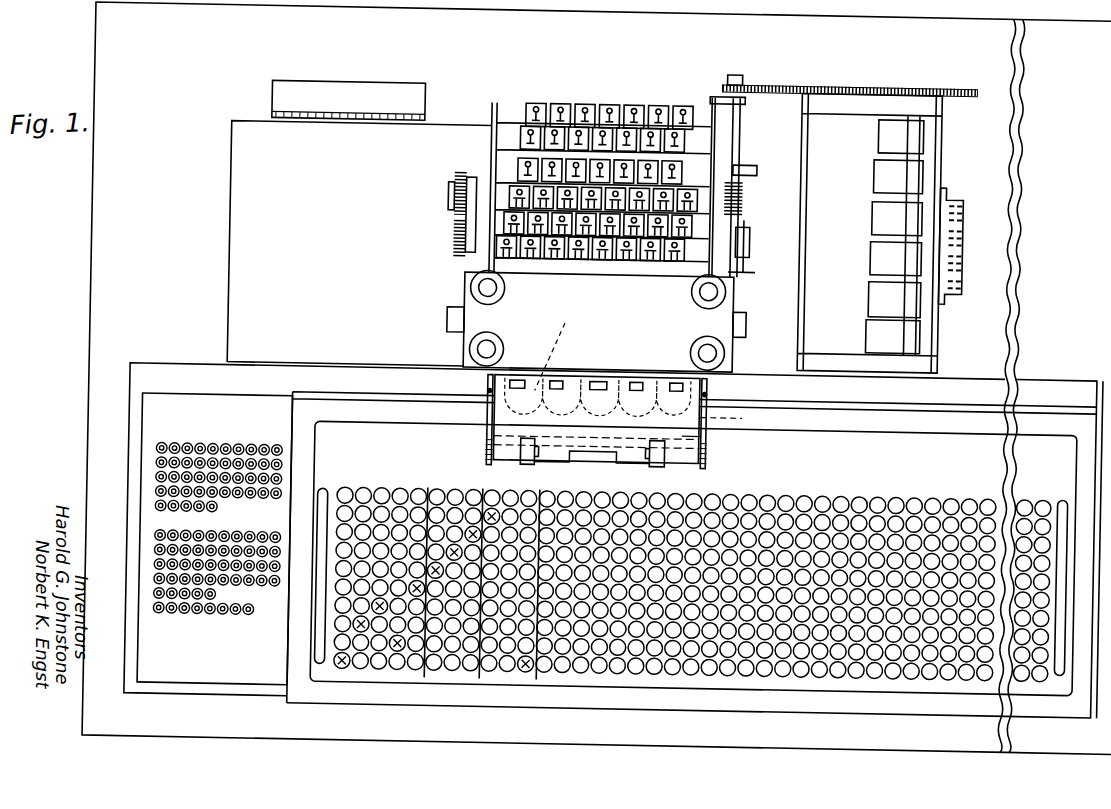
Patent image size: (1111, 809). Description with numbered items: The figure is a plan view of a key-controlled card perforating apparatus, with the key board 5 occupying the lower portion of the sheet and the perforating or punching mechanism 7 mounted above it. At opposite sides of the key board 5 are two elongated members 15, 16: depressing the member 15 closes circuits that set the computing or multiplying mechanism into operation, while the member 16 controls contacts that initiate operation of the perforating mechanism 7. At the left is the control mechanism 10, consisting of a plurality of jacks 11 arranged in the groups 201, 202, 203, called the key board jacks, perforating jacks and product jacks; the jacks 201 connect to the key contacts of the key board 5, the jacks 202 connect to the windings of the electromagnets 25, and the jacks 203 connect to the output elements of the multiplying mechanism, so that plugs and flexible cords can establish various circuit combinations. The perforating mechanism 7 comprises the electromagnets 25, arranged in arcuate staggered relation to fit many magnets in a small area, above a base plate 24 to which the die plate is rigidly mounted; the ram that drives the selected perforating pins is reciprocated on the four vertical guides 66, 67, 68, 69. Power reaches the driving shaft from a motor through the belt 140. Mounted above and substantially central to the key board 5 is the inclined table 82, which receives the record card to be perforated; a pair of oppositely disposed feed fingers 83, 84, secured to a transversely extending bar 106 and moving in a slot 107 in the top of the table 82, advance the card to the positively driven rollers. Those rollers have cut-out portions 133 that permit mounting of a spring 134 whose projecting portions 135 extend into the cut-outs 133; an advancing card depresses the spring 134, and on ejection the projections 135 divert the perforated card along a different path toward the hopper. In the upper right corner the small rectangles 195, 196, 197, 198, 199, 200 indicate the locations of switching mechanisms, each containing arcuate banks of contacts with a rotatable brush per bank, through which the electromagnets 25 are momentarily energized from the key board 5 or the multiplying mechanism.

The key board 5 is at (1041, 430).
The perforating or punching mechanism 7 is at (755, 130).
The control mechanism 10 is at (180, 435).
The jacks 11 is at (222, 442).
The elongated member 15 is at (334, 482).
The elongated member 16 is at (1071, 482).
The base plate 24 is at (442, 130).
The electromagnets 25 is at (565, 103).
The vertical guide 66 is at (715, 342).
The vertical guide 67 is at (714, 280).
The vertical guide 68 is at (494, 341).
The vertical guide 69 is at (493, 280).
The inclined table 82 is at (713, 425).
The feed finger 83 is at (536, 454).
The feed finger 84 is at (669, 453).
The transversely extending bar 106 is at (586, 429).
The slot 107 is at (664, 443).
The cut-out portions 133 is at (581, 372).
The spring 134 is at (738, 416).
The projecting portions 135 is at (561, 345).
The belt 140 is at (290, 97).
The switching mechanism rectangle 195 is at (910, 325).
The switching mechanism rectangle 196 is at (909, 289).
The switching mechanism rectangle 197 is at (912, 247).
The switching mechanism rectangle 198 is at (909, 205).
The switching mechanism rectangle 199 is at (909, 165).
The switching mechanism rectangle 200 is at (907, 125).
The key board jacks 201 is at (141, 559).
The perforating jacks 202 is at (138, 450).
The product jacks 203 is at (145, 612).